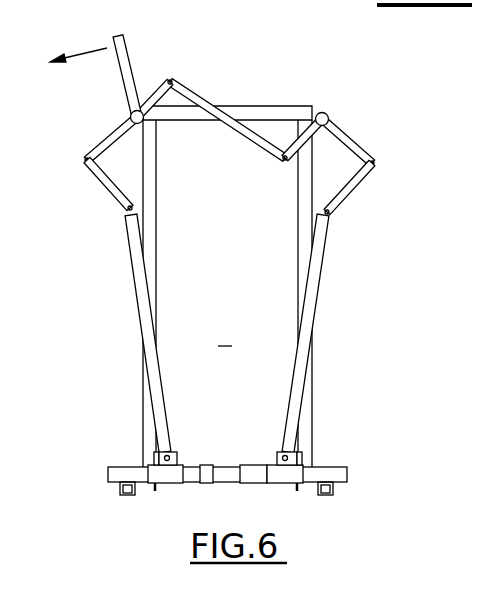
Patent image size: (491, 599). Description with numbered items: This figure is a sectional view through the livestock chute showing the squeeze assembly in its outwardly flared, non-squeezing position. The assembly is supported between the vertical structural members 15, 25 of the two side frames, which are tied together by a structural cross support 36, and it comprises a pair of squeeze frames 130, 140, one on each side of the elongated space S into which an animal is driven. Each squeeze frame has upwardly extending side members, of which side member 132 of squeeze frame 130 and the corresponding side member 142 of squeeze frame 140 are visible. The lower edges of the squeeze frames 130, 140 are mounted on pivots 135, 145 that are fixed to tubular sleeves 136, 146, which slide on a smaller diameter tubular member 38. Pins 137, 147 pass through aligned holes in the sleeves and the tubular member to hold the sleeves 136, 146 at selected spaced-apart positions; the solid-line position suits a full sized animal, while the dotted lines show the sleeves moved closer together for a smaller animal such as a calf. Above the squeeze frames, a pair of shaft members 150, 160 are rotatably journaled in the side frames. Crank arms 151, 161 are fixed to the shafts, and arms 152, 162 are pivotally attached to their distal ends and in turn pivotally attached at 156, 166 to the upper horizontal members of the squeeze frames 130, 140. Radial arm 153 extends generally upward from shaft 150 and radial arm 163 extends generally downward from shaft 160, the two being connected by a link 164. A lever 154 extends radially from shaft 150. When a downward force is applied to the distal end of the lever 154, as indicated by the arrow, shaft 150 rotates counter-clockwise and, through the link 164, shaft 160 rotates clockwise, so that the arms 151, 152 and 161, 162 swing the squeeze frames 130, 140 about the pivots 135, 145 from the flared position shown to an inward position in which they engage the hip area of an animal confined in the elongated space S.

The vertical structural member 15 is at (153, 263).
The vertical structural member 25 is at (303, 243).
The structural cross support 36 is at (243, 110).
The tubular member 38 is at (227, 477).
The squeeze frame 130 is at (97, 339).
The side member 132 is at (147, 317).
The pivot 135 is at (157, 440).
The tubular sleeve 136 is at (197, 482).
The pin 137 is at (155, 458).
The squeeze frame 140 is at (353, 339).
The side member 142 is at (303, 338).
The pivot 145 is at (290, 458).
The tubular sleeve 146 is at (253, 481).
The pin 147 is at (300, 460).
The shaft member 150 is at (128, 113).
The crank arm 151 is at (107, 137).
The arm 152 is at (107, 180).
The radial arm 153 is at (173, 90).
The lever 154 is at (122, 43).
The pivot 156 is at (122, 208).
The shaft member 160 is at (326, 111).
The crank arm 161 is at (345, 133).
The arm 162 is at (362, 183).
The radial arm 163 is at (290, 167).
The link 164 is at (253, 140).
The pivot 166 is at (333, 213).
The elongated space S is at (225, 336).